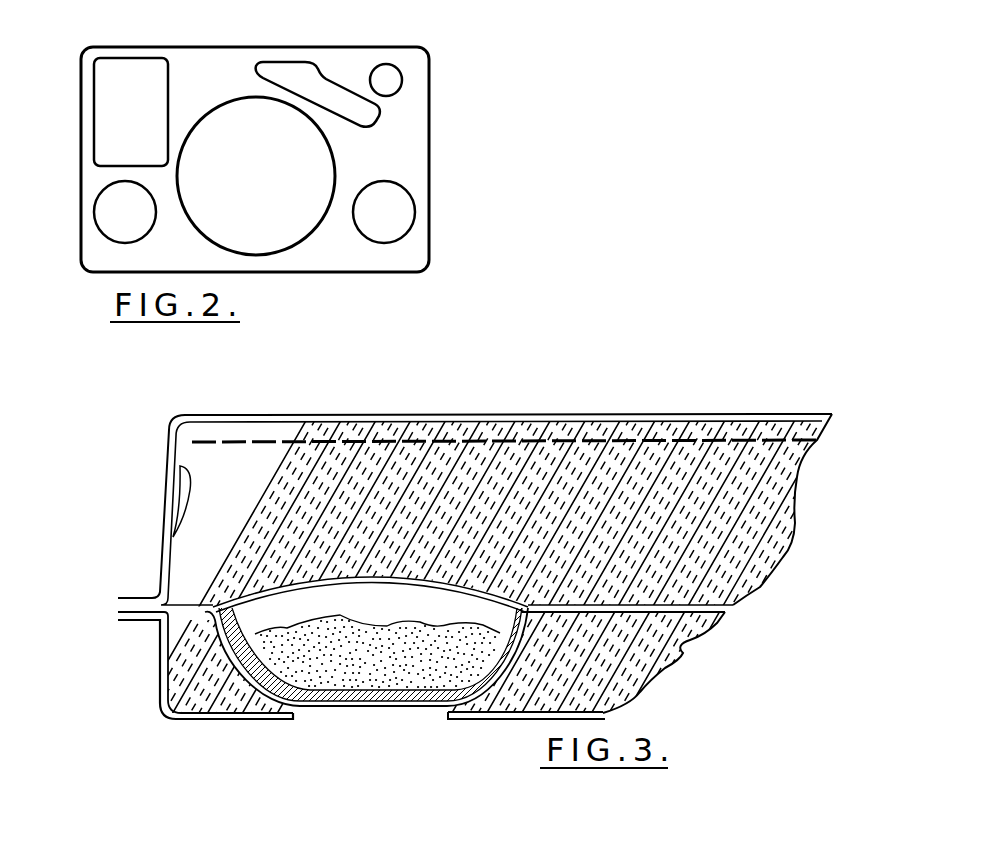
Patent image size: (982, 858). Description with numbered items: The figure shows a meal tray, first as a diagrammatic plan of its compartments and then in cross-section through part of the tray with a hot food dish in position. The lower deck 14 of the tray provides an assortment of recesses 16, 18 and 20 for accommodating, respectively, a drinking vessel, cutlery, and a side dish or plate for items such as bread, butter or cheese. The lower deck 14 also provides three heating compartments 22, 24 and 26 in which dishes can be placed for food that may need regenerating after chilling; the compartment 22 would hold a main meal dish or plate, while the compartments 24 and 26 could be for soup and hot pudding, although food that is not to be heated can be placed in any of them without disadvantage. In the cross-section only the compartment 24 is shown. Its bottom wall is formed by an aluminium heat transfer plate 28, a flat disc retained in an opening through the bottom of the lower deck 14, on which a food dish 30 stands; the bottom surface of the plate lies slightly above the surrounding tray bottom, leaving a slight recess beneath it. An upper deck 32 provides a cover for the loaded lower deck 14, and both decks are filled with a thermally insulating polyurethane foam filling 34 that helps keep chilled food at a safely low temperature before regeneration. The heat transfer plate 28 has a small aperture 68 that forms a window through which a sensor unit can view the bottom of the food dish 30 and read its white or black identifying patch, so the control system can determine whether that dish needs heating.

In FIG. 2, the lower deck 14 is at (410, 147).
In FIG. 3, the lower deck 14 is at (163, 649).
In FIG. 2, the recess 16 is at (388, 82).
In FIG. 2, the recess 18 is at (297, 72).
In FIG. 2, the recess 20 is at (122, 78).
In FIG. 2, the heating compartment 22 is at (298, 217).
In FIG. 2, the heating compartment 24 is at (110, 218).
In FIG. 3, the heating compartment 24 is at (176, 687).
In FIG. 2, the heating compartment 26 is at (392, 220).
In FIG. 3, the heat transfer plate 28 is at (321, 708).
In FIG. 3, the food dish 30 is at (482, 720).
In FIG. 3, the upper deck 32 is at (178, 467).
In FIG. 3, the thermally insulating polyurethane foam filling 34 is at (700, 555).
In FIG. 3, the small aperture 68 is at (370, 707).